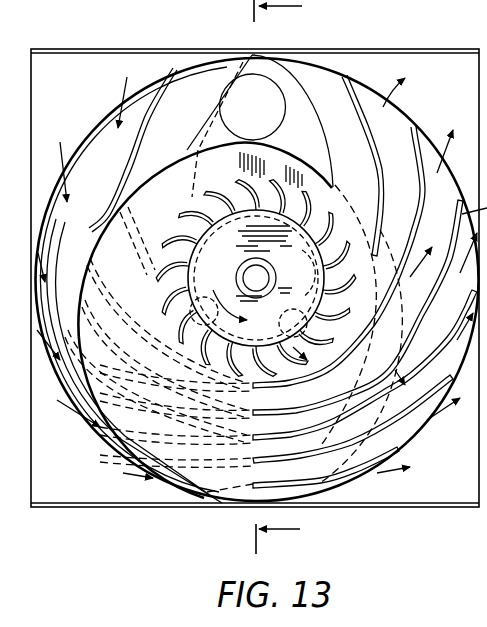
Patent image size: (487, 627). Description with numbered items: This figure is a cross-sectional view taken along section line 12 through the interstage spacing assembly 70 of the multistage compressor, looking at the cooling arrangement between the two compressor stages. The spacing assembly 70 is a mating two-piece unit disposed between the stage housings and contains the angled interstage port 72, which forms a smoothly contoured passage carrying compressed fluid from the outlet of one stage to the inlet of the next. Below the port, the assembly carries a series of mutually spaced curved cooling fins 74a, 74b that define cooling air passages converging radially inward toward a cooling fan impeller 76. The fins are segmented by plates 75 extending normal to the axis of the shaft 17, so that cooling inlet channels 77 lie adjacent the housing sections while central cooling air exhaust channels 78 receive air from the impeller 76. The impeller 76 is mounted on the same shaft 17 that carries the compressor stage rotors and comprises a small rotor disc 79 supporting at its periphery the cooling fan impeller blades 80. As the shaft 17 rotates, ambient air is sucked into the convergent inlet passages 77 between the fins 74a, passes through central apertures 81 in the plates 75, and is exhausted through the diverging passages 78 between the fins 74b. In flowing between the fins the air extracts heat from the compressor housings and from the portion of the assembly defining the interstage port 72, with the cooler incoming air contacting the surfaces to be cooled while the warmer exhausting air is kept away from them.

The section line 12 is at (278, 284).
The shaft 17 is at (250, 276).
The spacing assembly 70 is at (232, 66).
The interstage port 72 is at (268, 88).
The cooling fins 74a is at (112, 447).
The cooling fins 74b is at (398, 452).
The plates 75 is at (338, 115).
The cooling fan impeller 76 is at (333, 286).
The cooling inlet channels 77 is at (102, 146).
The cooling air exhaust channels 78 is at (397, 125).
The rotor disc 79 is at (323, 176).
The cooling fan impeller blades 80 is at (234, 168).
The central apertures 81 is at (203, 341).